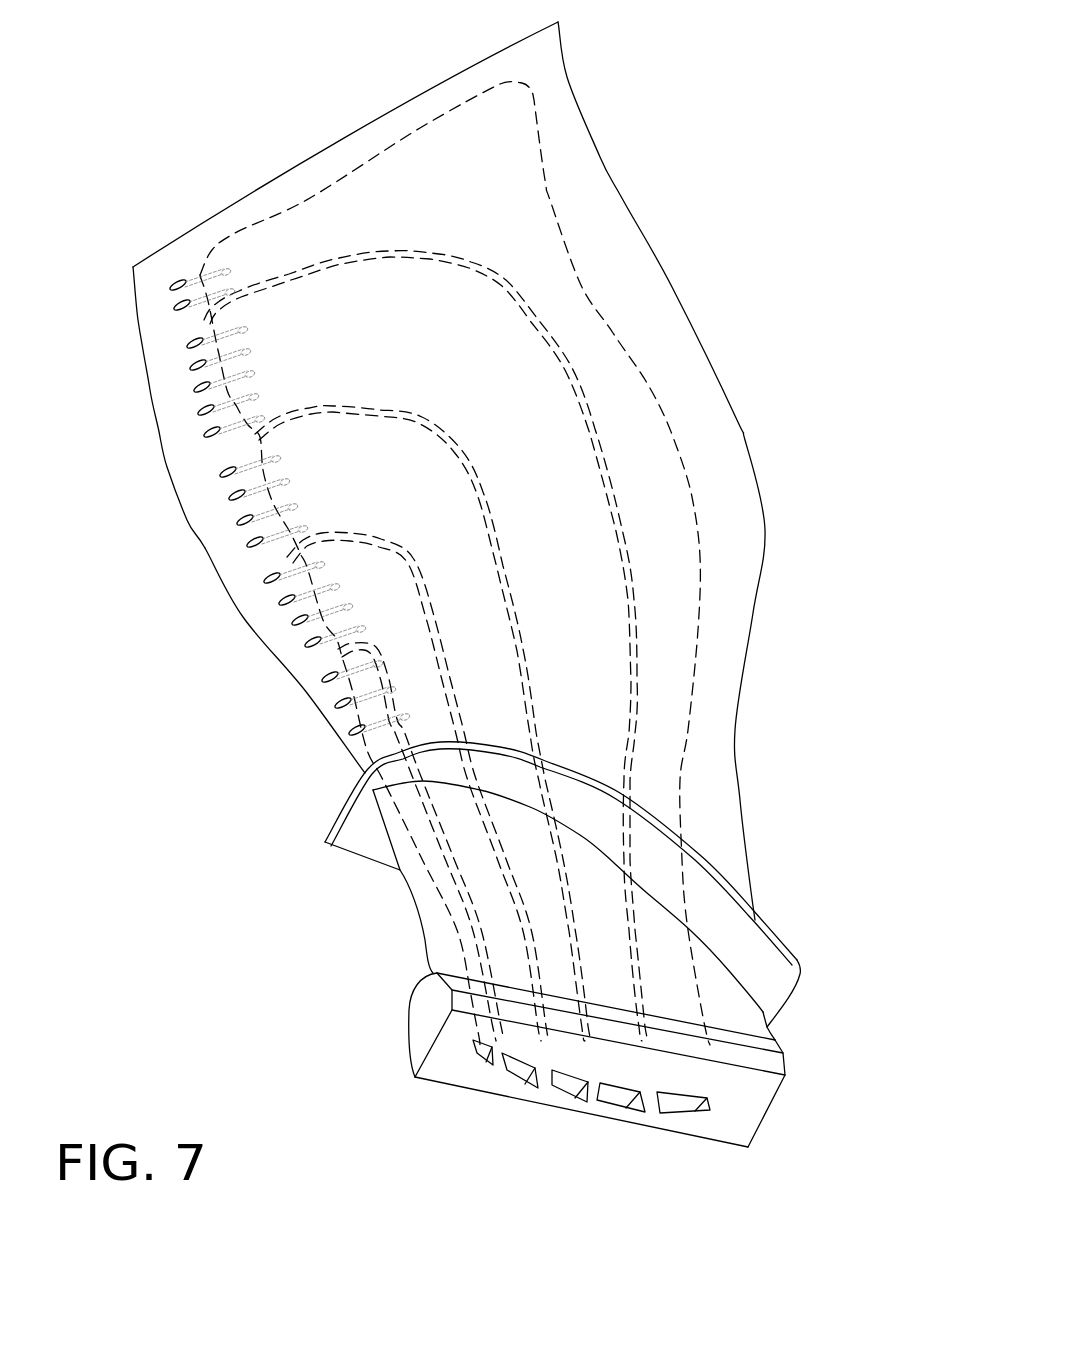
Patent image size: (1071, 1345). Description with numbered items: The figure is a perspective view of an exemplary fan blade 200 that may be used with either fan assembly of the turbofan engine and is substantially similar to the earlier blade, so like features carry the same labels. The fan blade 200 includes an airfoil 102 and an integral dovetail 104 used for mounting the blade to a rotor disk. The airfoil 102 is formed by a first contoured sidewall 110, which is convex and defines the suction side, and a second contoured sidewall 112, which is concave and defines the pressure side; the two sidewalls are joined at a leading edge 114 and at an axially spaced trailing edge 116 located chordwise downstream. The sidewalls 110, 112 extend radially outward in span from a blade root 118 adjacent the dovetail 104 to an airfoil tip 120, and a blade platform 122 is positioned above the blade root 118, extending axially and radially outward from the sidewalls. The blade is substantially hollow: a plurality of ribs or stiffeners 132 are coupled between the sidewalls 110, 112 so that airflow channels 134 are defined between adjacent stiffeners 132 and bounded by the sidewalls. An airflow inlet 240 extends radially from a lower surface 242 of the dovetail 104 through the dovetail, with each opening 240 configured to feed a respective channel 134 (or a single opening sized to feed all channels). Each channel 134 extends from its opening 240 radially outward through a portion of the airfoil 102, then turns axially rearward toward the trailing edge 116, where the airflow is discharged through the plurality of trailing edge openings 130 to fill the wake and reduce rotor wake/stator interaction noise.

The fan blade 200 is at (617, 62).
The airfoil 102 is at (673, 287).
The dovetail 104 is at (407, 1042).
The first contoured sidewall 110 is at (137, 380).
The second contoured sidewall 112 is at (202, 465).
The leading edge 114 is at (738, 420).
The trailing edge 116 is at (242, 615).
The blade root 118 is at (425, 947).
The airfoil tip 120 is at (387, 108).
The blade platform 122 is at (792, 947).
The trailing edge openings 130 is at (178, 283).
The ribs or stiffeners 132 is at (383, 252).
The airflow channels 134 is at (405, 309).
The airflow inlet 240 is at (566, 1085).
The lower surface 242 is at (755, 1098).